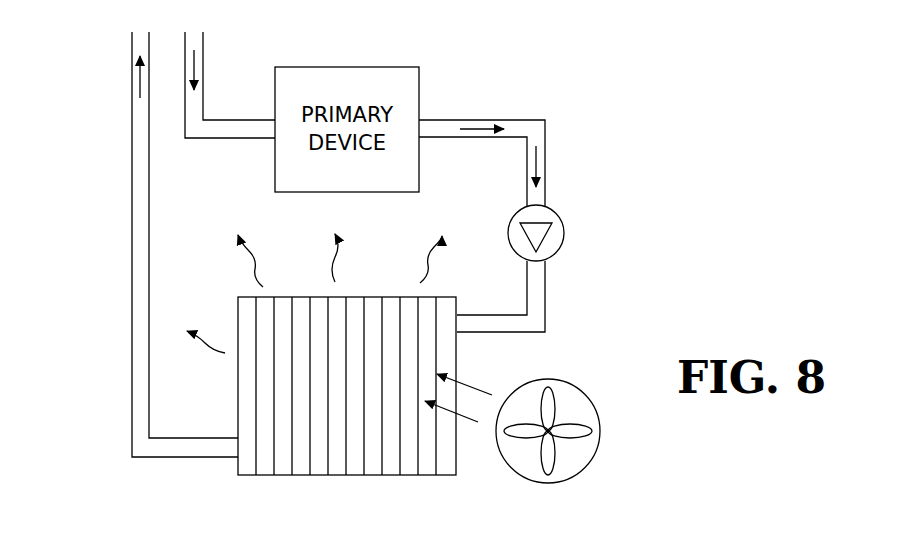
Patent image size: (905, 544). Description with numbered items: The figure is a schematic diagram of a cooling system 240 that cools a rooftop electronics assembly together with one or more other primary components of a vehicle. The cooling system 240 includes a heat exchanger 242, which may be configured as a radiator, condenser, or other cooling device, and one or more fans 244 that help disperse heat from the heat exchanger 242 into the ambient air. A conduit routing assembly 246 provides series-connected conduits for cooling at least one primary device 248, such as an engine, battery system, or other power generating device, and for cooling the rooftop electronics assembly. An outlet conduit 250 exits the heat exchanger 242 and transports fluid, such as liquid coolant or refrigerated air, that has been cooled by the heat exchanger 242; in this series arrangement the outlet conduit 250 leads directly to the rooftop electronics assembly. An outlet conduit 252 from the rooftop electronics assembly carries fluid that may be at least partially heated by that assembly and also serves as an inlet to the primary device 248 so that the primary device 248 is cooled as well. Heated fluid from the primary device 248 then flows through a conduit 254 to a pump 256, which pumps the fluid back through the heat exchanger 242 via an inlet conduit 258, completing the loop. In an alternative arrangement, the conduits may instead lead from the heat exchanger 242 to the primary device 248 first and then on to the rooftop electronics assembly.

The cooling system 240 is at (742, 186).
The heat exchanger 242 is at (377, 475).
The fan 244 is at (550, 484).
The conduit routing assembly 246 is at (115, 160).
The primary device 248 is at (338, 192).
The outlet conduit 250 is at (130, 373).
The outlet conduit 252 is at (240, 142).
The conduit 254 is at (442, 119).
The pump 256 is at (567, 235).
The inlet conduit 258 is at (547, 297).